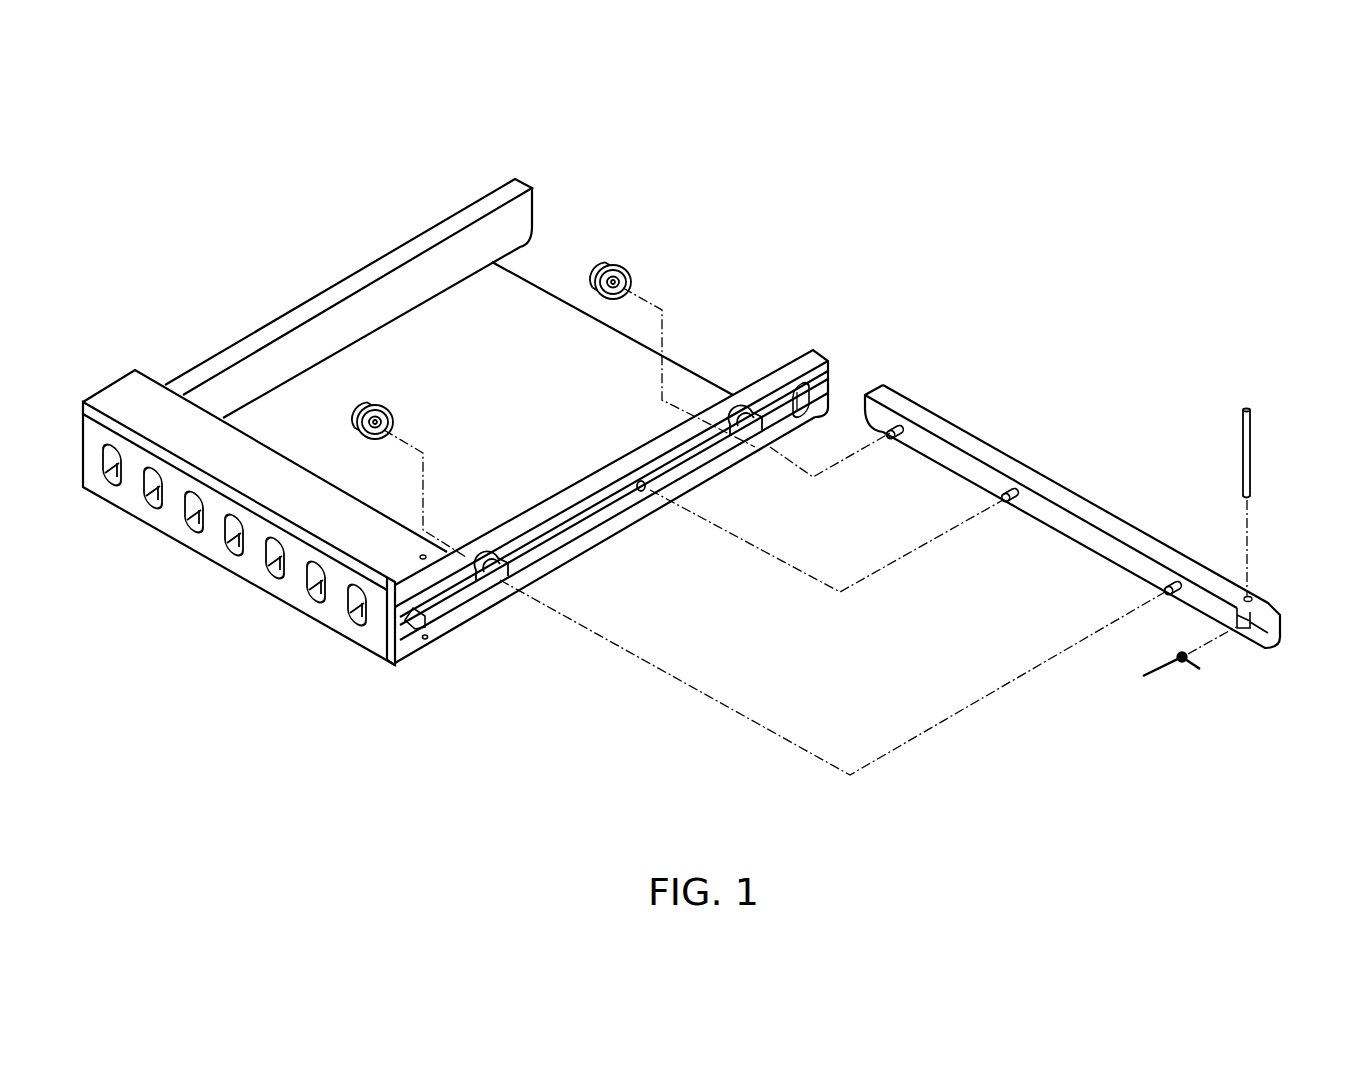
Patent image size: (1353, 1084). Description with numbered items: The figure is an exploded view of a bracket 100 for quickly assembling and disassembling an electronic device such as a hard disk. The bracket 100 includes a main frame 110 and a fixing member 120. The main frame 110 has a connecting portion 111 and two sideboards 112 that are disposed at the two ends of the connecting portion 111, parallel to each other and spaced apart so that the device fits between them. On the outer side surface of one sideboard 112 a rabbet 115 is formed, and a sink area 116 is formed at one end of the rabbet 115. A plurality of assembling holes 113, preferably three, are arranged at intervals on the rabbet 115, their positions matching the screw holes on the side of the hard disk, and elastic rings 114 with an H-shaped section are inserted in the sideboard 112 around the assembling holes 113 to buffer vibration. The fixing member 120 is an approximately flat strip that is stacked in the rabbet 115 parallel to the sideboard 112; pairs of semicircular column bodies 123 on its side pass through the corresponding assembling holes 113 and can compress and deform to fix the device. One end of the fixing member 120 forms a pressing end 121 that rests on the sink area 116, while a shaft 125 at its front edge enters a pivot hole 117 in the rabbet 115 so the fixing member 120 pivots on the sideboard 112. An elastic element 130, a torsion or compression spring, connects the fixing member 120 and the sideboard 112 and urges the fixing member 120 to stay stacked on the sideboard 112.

The bracket 100 is at (250, 224).
The main frame 110 is at (241, 609).
The connecting portion 111 is at (133, 497).
The sideboards 112 is at (458, 227).
The assembling holes 113 is at (742, 437).
The elastic rings 114 is at (377, 402).
The rabbet 115 is at (588, 524).
The sink area 116 is at (396, 661).
The pivot hole 117 is at (428, 645).
The fixing member 120 is at (975, 445).
The pressing end 121 is at (1280, 628).
The column bodies 123 is at (900, 442).
The shaft 125 is at (1250, 457).
The elastic element 130 is at (1183, 662).